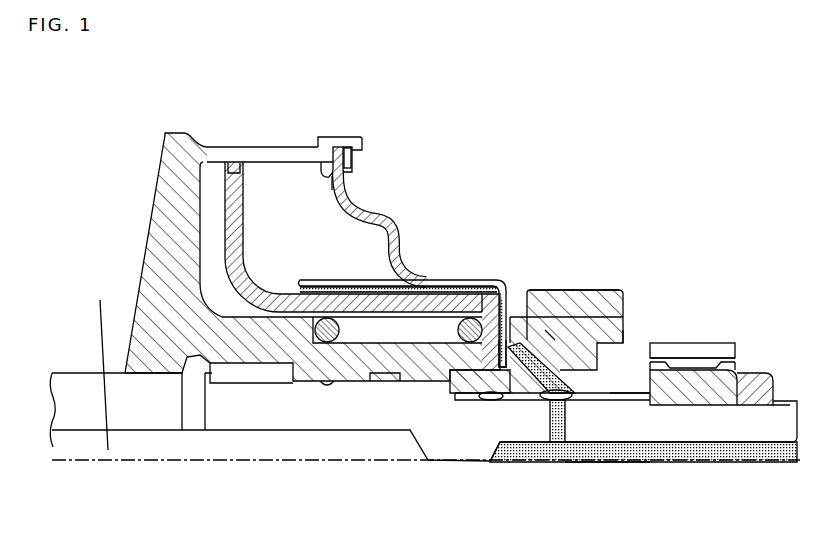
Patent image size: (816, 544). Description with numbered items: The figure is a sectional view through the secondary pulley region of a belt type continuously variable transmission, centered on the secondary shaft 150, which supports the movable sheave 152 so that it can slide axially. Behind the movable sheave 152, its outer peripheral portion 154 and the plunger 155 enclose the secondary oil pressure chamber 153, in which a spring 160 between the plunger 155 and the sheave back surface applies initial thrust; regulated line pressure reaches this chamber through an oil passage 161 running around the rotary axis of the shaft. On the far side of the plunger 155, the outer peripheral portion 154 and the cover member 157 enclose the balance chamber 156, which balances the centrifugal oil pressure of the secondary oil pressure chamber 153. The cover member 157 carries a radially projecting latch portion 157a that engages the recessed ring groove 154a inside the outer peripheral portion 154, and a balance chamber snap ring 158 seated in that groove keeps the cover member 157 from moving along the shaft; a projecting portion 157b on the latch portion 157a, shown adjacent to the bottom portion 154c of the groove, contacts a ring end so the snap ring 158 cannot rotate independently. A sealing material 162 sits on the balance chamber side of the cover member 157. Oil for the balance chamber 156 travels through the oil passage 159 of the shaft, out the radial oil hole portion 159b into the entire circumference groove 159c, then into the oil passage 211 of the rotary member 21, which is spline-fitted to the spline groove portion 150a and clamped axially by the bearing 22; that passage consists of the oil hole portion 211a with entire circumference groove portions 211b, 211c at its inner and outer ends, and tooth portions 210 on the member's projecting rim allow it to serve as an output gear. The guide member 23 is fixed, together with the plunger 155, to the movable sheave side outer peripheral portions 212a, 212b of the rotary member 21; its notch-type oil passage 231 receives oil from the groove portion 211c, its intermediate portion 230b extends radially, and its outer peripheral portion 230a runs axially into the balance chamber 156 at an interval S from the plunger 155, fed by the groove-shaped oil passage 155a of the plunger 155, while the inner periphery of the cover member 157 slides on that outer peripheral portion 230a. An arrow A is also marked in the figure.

The secondary shaft 150 is at (78, 388).
The spline groove portion 150a is at (625, 387).
The movable sheave 152 is at (172, 220).
The secondary oil pressure chamber 153 is at (220, 273).
The outer peripheral portion 154 is at (275, 152).
The ring groove 154a is at (364, 140).
The bottom portion 154c is at (350, 147).
The plunger 155 is at (165, 138).
The oil passage 155a is at (510, 290).
The balance chamber 156 is at (233, 205).
The cover member 157 is at (385, 227).
The latch portion 157a is at (338, 158).
The projecting portion 157b is at (350, 160).
The balance chamber snap ring 158 is at (336, 182).
The oil passage 159 is at (700, 452).
The oil hole portion 159b is at (563, 424).
The entire circumference groove 159c is at (575, 405).
The spring 160 is at (312, 348).
The oil passage 161 is at (183, 405).
The sealing material 162 is at (325, 172).
The rotary member 21 is at (600, 315).
The tooth portions 210 is at (578, 296).
The oil passage 211 is at (512, 380).
The oil hole portion 211a is at (552, 335).
The entire circumference groove portion 211b is at (642, 335).
The entire circumference groove portion 211c is at (537, 325).
The movable sheave side outer peripheral portion 212a is at (497, 375).
The movable sheave side outer peripheral portion 212b is at (520, 345).
The bearing 22 is at (688, 380).
The guide member 23 is at (448, 281).
The outer peripheral portion 230a is at (373, 282).
The intermediate portion 230b is at (447, 385).
The oil passage 231 is at (497, 402).
The interval S is at (290, 283).
The direction A is at (453, 147).